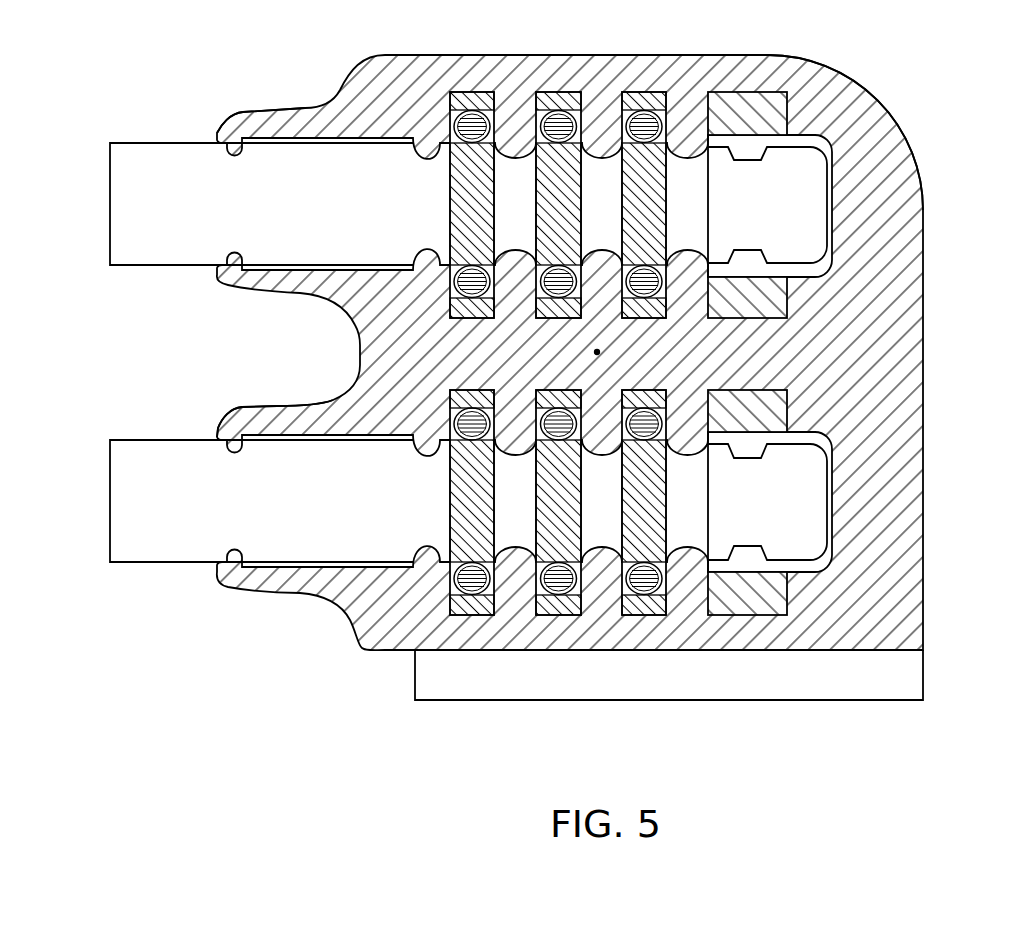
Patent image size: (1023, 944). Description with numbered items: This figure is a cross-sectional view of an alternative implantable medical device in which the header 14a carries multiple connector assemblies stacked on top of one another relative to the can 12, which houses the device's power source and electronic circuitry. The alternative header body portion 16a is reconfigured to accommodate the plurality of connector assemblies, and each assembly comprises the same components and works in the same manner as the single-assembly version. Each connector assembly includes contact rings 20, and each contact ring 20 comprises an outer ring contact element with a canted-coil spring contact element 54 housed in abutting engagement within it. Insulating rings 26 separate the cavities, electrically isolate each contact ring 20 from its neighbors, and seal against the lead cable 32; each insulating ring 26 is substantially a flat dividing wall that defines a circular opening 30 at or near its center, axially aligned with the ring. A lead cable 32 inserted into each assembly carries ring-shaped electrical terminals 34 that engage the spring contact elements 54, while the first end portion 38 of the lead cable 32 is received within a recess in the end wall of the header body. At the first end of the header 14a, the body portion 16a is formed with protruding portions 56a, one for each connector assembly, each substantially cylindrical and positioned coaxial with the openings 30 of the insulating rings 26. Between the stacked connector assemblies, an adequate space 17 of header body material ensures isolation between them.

The can 12 is at (425, 677).
The alternative header 14a is at (925, 270).
The alternative header body portion 16a is at (892, 118).
The space 17 is at (600, 352).
The contact ring 20 is at (472, 103).
The insulating ring 26 is at (521, 120).
The opening 30 is at (665, 188).
The lead cable 32 is at (130, 170).
The electrical terminal 34 is at (462, 183).
The first end portion 38 is at (806, 160).
The canted-coil spring contact element 54 is at (643, 108).
The protruding portion 56a is at (276, 112).